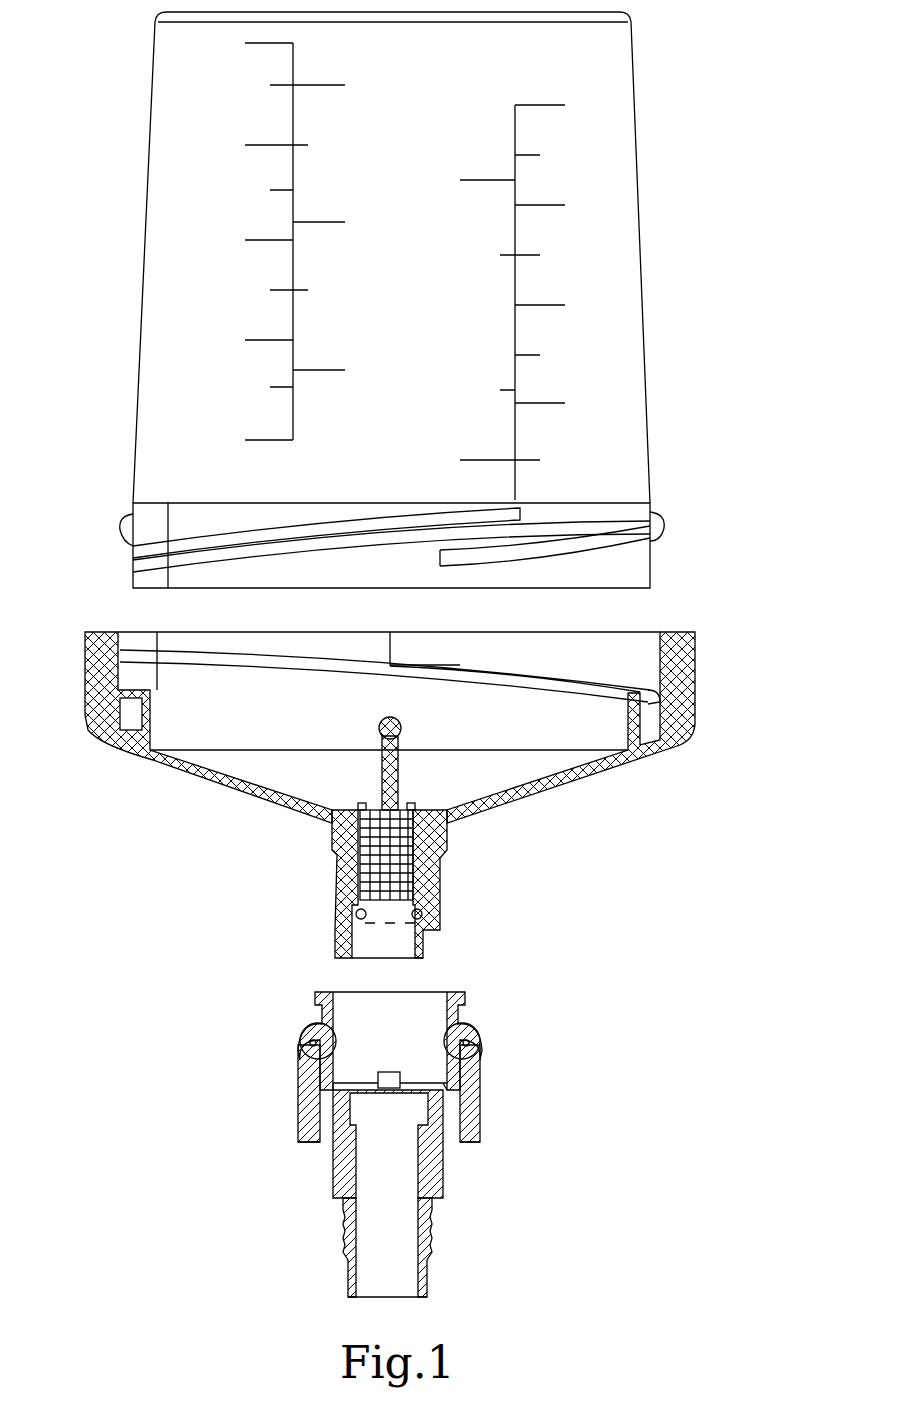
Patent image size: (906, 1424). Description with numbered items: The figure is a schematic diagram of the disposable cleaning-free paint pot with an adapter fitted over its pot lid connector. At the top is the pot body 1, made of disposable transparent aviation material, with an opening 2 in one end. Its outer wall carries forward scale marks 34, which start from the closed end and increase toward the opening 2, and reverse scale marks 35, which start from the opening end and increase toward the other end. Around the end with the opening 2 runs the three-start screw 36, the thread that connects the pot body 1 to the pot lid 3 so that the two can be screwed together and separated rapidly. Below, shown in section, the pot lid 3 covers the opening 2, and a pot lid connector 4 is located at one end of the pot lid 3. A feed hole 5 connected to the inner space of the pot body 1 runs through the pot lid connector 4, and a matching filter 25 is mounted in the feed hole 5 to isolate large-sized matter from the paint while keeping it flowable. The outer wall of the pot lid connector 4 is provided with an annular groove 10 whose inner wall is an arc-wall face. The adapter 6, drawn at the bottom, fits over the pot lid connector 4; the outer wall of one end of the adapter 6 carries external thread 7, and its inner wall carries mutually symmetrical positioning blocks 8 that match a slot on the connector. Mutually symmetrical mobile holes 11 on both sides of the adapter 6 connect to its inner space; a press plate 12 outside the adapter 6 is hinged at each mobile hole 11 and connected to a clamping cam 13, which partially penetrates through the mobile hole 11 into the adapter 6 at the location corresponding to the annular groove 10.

The pot body 1 is at (650, 388).
The opening 2 is at (388, 585).
The pot lid 3 is at (672, 700).
The pot lid connector 4 is at (335, 880).
The feed hole 5 is at (445, 908).
The adapter 6 is at (435, 1170).
The external thread 7 is at (433, 1230).
The positioning block 8 is at (395, 1085).
The annular groove 10 is at (335, 862).
The mobile hole 11 is at (305, 1064).
The press plate 12 is at (300, 1125).
The clamping cam 13 is at (312, 1028).
The filter 25 is at (440, 865).
The forward scale marks 34 is at (293, 275).
The reverse scale marks 35 is at (515, 280).
The three-start screw 36 is at (630, 540).